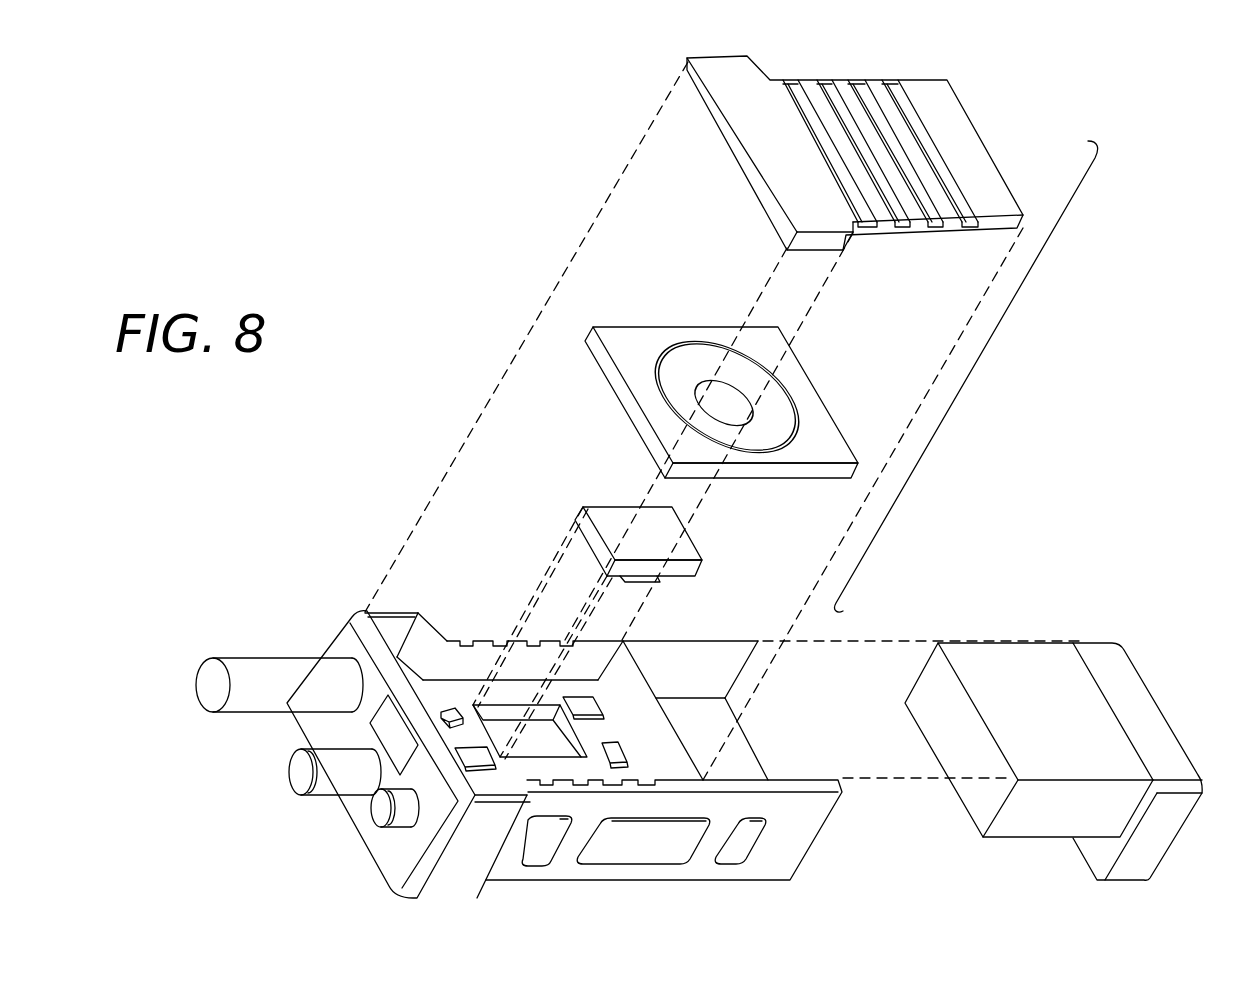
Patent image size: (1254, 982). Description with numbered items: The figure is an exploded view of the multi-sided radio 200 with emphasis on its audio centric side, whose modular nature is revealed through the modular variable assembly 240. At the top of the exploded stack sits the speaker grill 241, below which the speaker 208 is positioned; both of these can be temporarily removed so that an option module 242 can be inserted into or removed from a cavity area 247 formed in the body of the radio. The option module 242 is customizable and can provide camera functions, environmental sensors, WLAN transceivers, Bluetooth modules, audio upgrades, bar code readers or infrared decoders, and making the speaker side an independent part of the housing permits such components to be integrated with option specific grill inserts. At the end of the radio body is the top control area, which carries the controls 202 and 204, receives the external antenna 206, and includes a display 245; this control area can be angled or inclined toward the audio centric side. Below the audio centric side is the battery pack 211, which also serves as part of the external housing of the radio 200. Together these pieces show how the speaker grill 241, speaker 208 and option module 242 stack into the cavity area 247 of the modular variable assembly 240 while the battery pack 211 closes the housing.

The multi-sided radio 200 is at (1216, 438).
The control 202 is at (375, 817).
The control 204 is at (297, 773).
The antenna 206 is at (238, 658).
The speaker 208 is at (622, 325).
The battery pack 211 is at (1107, 641).
The modular variable assembly 240 is at (978, 384).
The speaker grill 241 is at (937, 80).
The option module 242 is at (615, 505).
The display 245 is at (382, 721).
The cavity area 247 is at (495, 715).